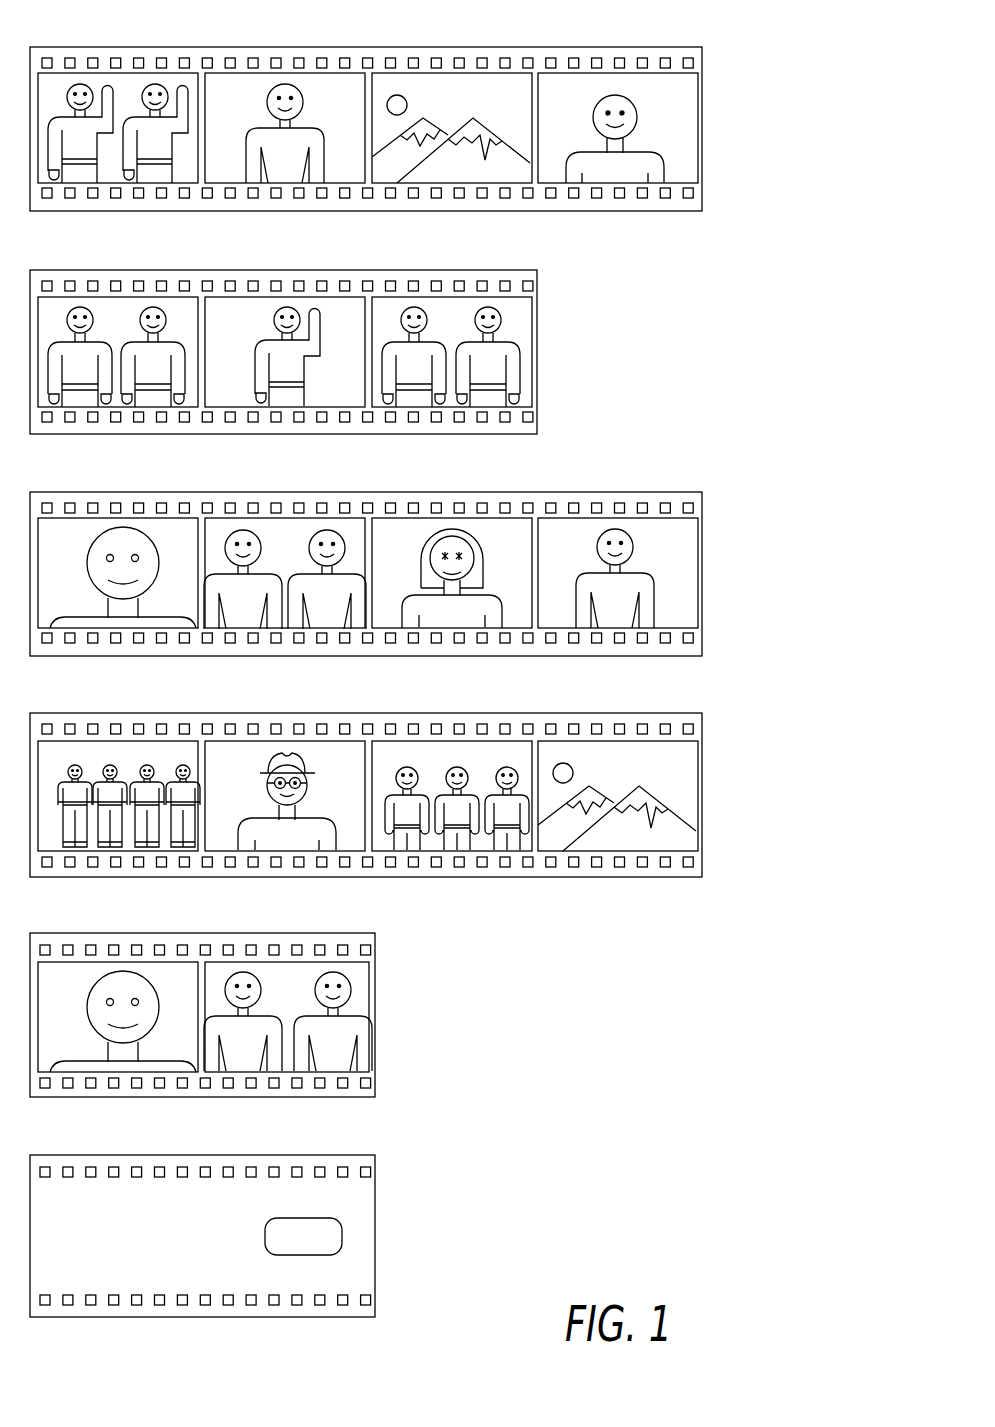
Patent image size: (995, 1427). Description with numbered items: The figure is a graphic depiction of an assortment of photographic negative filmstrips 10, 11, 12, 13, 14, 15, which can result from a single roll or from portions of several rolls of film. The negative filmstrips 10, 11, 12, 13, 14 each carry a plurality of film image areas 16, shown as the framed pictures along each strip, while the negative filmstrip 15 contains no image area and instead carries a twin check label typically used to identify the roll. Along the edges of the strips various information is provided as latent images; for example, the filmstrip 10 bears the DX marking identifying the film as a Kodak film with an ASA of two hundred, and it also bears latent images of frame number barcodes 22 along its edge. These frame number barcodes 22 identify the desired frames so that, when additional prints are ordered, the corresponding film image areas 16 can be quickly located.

The negative filmstrip 10 is at (706, 126).
The negative filmstrip 11 is at (542, 349).
The negative filmstrip 12 is at (706, 571).
The negative filmstrip 13 is at (709, 792).
The negative filmstrip 14 is at (381, 1014).
The negative filmstrip 15 is at (381, 1234).
The film image area 16 is at (121, 85).
The frame number barcode 22 is at (643, 212).